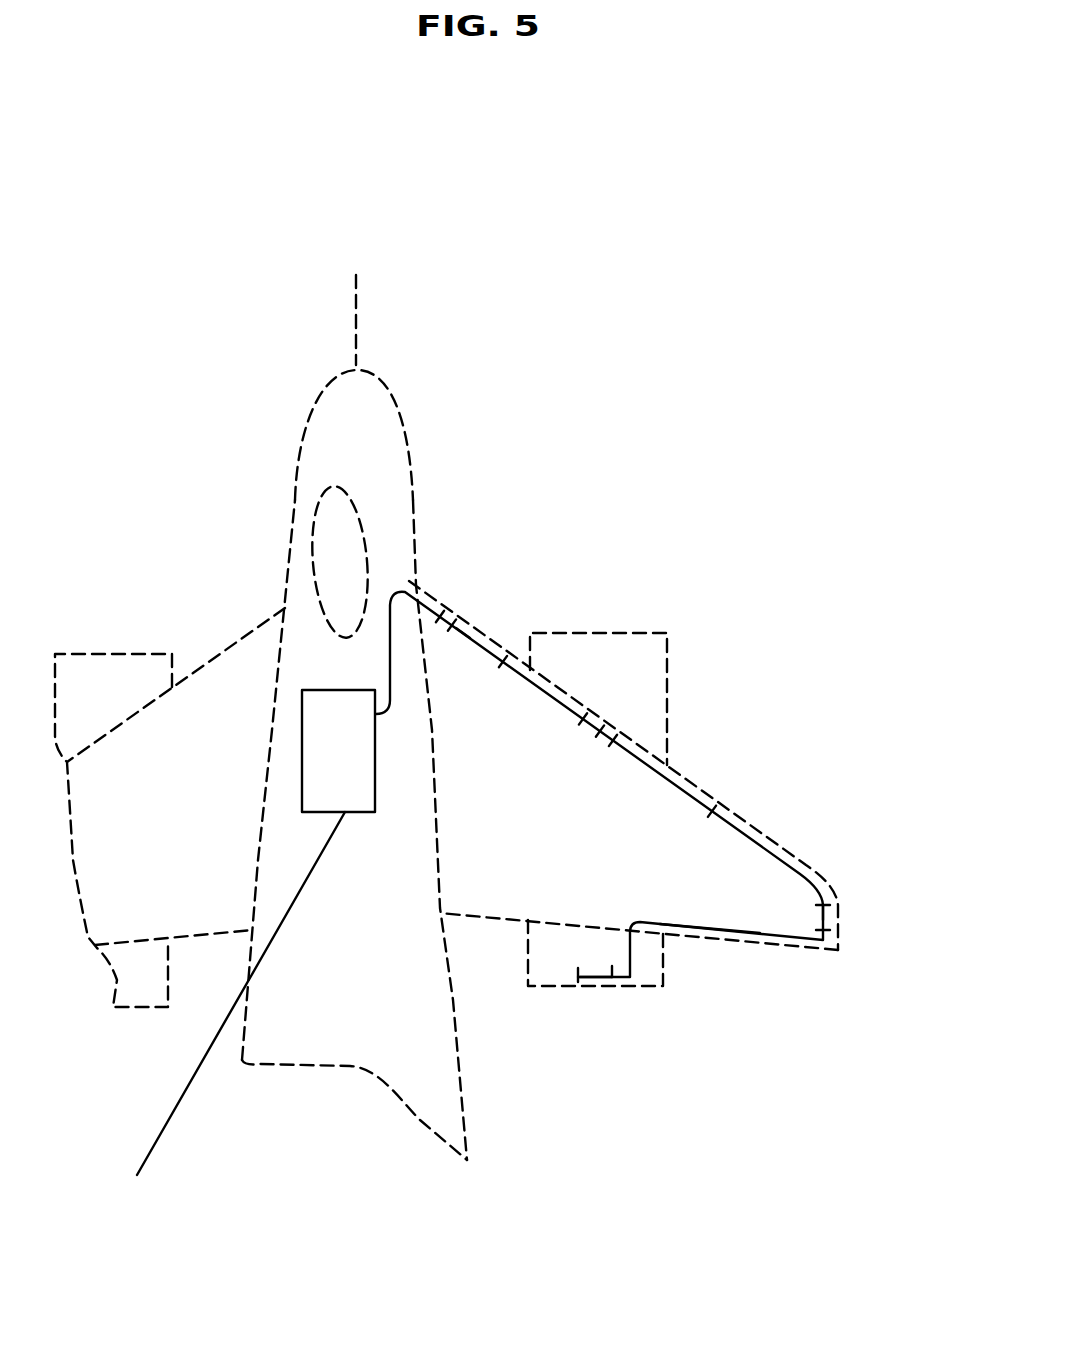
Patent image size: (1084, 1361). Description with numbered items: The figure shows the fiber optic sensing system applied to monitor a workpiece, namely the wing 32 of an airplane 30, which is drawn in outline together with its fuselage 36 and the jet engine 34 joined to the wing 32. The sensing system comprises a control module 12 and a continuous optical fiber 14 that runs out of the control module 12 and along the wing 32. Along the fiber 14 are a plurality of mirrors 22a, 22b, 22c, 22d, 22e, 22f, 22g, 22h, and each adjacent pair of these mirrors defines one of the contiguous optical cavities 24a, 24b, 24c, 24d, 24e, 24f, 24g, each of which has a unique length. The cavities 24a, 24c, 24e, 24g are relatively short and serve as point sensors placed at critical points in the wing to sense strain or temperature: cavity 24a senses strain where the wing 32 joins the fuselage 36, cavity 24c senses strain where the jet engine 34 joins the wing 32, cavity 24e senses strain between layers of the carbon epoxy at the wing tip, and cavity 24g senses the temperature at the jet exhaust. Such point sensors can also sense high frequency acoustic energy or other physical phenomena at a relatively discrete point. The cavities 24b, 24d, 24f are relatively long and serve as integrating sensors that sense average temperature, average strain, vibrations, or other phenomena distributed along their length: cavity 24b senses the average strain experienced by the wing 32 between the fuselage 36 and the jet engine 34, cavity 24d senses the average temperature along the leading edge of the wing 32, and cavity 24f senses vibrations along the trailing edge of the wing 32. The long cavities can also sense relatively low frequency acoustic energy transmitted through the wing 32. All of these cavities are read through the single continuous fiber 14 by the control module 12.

The airplane 30 is at (430, 262).
The wing 32 is at (728, 810).
The jet engine 34 is at (669, 634).
The fuselage 36 is at (399, 402).
The control module 12 is at (320, 690).
The continuous optical fiber 14 is at (403, 590).
The mirror 22a is at (441, 612).
The optical cavity 24a is at (450, 620).
The mirror 22b is at (461, 623).
The optical cavity 24b is at (506, 652).
The mirror 22c is at (585, 716).
The optical cavity 24c is at (601, 720).
The mirror 22d is at (614, 735).
The optical cavity 24d is at (714, 805).
The mirror 22e is at (828, 906).
The optical cavity 24e is at (832, 908).
The mirror 22f is at (834, 932).
The optical cavity 24f is at (692, 925).
The mirror 22g is at (608, 978).
The optical cavity 24g is at (597, 977).
The mirror 22h is at (578, 980).